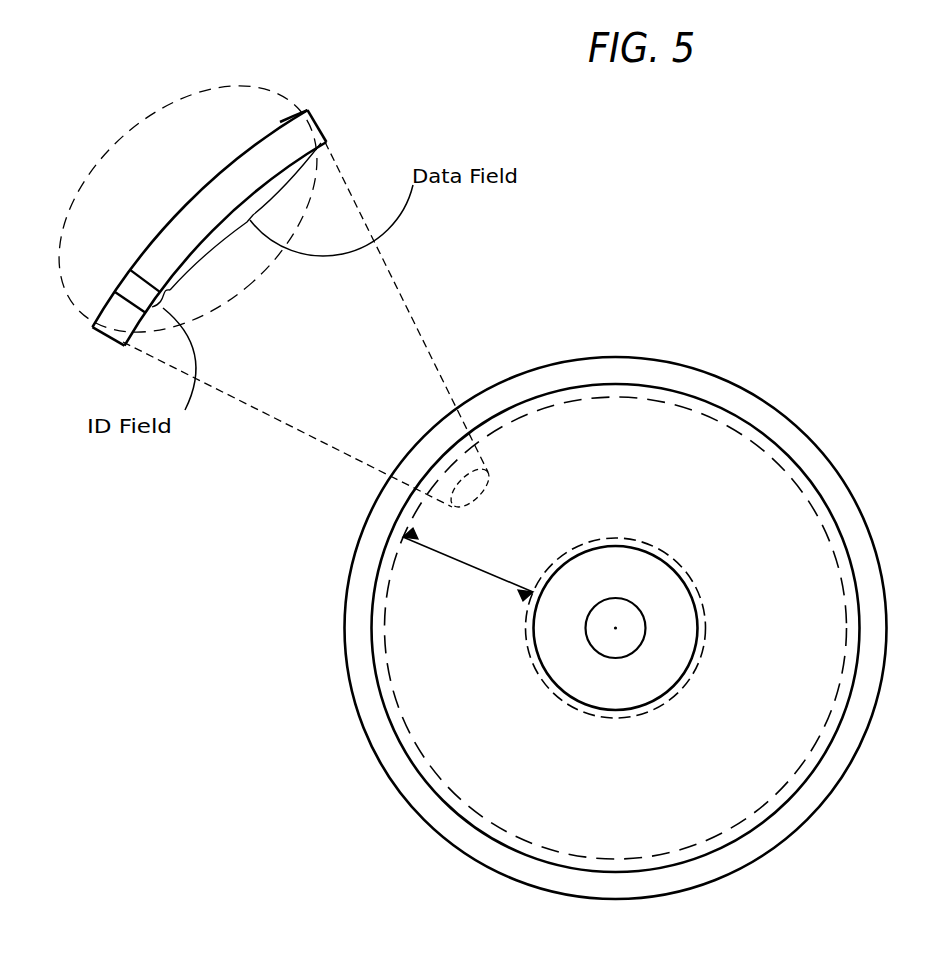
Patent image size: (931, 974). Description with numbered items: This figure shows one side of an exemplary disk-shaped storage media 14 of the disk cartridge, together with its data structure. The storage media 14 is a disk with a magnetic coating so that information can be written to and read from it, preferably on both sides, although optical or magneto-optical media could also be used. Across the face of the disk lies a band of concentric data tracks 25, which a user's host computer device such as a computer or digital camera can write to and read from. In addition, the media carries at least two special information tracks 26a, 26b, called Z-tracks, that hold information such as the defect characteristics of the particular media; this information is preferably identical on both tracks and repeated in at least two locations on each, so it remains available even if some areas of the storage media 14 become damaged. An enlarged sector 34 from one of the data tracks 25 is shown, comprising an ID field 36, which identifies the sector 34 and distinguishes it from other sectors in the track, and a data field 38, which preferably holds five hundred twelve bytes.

The storage media 14 is at (782, 882).
The band of concentric data tracks 25 is at (462, 557).
The special information track 26a is at (377, 673).
The special information track 26b is at (583, 712).
The sector 34 is at (220, 172).
The ID field 36 is at (130, 285).
The data field 38 is at (298, 140).